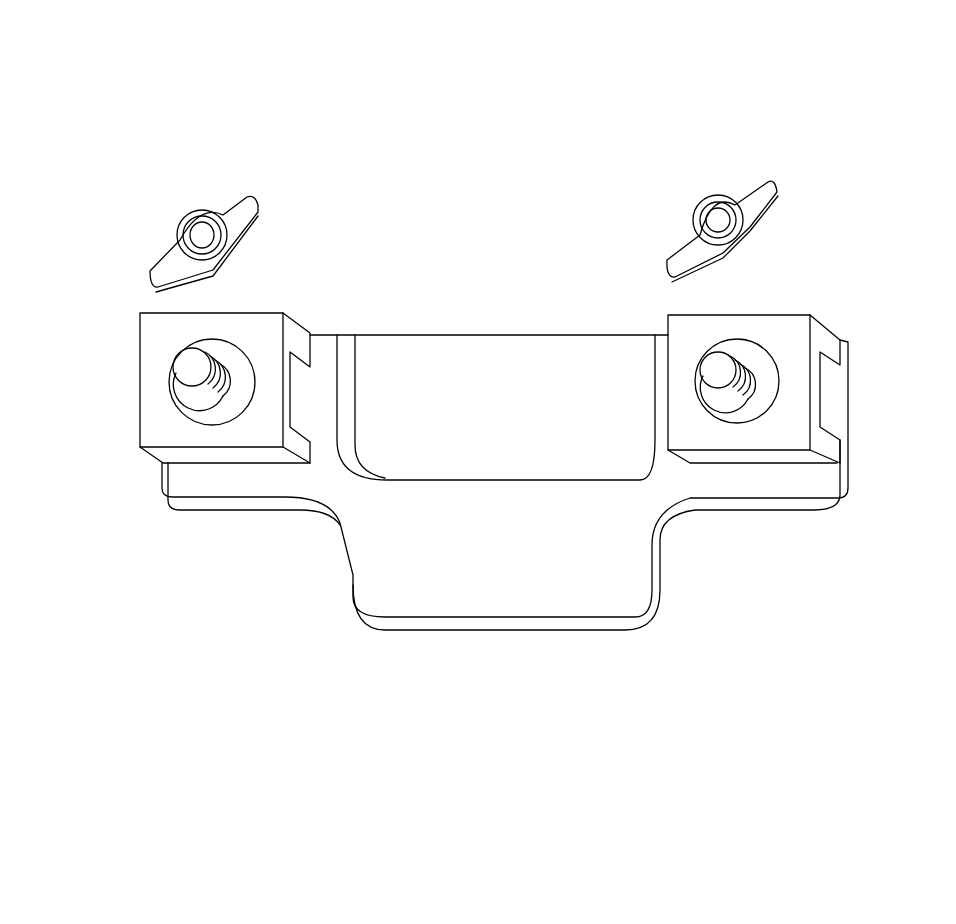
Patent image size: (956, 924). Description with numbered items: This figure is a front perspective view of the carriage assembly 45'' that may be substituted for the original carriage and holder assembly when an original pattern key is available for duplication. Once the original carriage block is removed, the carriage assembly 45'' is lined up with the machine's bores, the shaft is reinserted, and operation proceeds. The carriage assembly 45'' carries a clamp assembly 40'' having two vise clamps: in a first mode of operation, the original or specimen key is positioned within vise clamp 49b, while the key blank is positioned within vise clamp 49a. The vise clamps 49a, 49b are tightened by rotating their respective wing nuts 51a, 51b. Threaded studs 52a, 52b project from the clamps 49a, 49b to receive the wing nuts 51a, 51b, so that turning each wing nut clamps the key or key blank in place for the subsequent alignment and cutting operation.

The clamp assembly 40'' is at (446, 437).
The carriage assembly 45'' is at (494, 485).
The vise clamp 49a is at (243, 326).
The vise clamp 49b is at (770, 328).
The wing nut 51a is at (237, 212).
The wing nut 51b is at (755, 198).
The first threaded stud 52a is at (185, 368).
The second threaded stud 52b is at (714, 370).